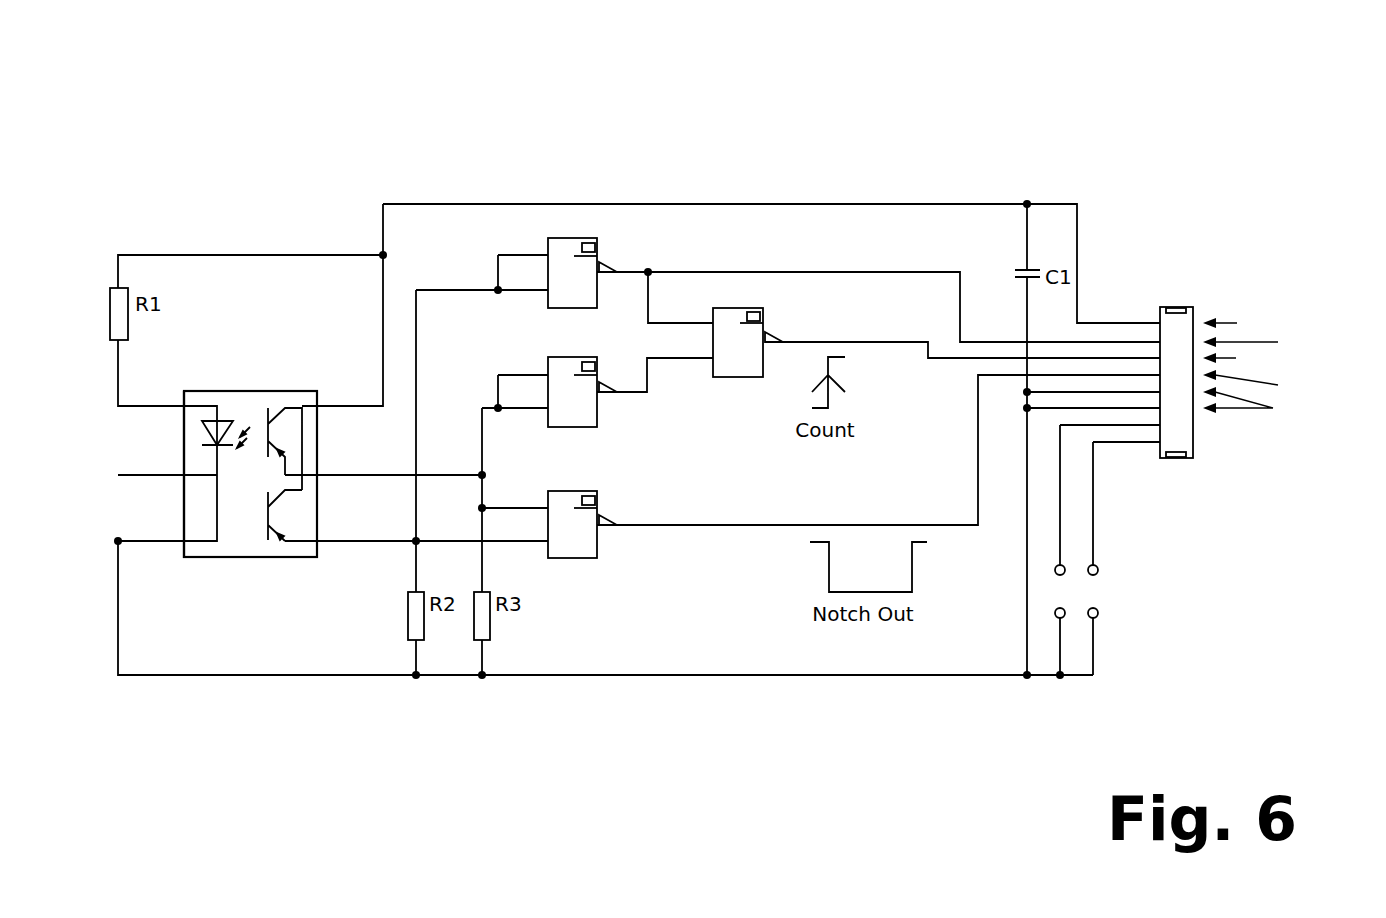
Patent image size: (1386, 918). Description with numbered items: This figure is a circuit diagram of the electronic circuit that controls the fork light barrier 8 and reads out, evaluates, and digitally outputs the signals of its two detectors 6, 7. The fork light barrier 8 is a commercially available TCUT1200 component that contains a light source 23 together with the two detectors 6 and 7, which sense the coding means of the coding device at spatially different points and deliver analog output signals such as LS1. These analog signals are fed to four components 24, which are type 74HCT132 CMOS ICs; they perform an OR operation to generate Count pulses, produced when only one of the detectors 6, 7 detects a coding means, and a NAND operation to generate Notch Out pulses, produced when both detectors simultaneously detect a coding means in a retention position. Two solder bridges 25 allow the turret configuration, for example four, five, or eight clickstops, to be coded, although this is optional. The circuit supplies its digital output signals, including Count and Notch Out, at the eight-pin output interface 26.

The detector 6 is at (283, 515).
The detector 7 is at (285, 435).
The fork light barrier 8 is at (248, 557).
The light source 23 is at (197, 432).
The components 24 is at (567, 375).
The solder bridges 25 is at (1070, 587).
The 8-pin output interface 26 is at (1181, 292).
The analog output signal LS1 is at (257, 459).